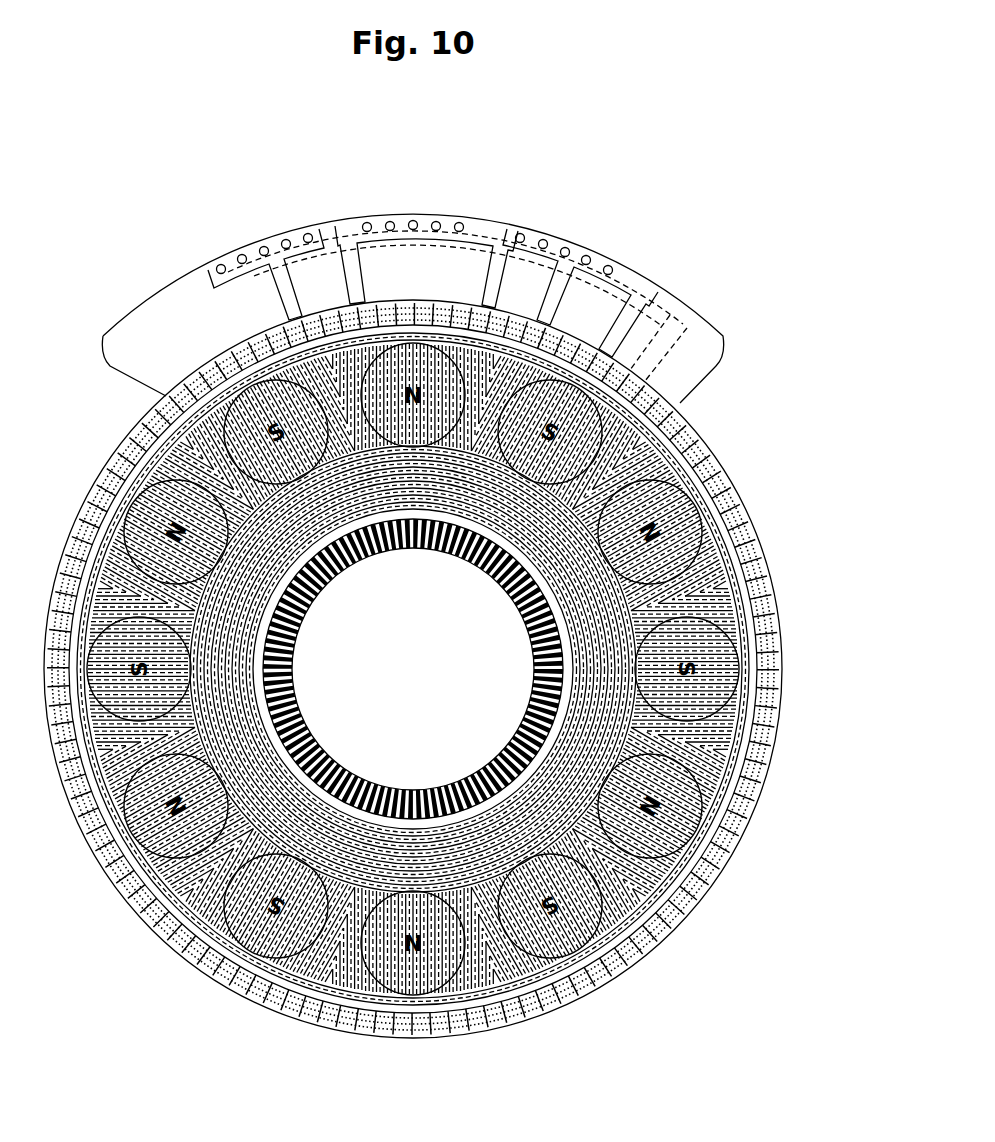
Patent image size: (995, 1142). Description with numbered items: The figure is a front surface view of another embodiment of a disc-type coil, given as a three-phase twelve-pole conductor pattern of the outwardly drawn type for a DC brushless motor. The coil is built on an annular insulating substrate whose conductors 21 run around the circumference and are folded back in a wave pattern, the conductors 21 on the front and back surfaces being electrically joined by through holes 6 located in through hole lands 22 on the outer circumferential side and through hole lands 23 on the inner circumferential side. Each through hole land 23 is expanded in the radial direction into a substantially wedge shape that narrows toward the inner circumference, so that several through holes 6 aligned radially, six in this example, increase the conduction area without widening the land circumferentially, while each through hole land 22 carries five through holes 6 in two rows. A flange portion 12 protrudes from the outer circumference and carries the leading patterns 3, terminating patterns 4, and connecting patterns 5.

The leading pattern 3 is at (488, 240).
The terminating pattern 4 is at (540, 247).
The connecting pattern 5 is at (645, 330).
The through hole 6 is at (407, 539).
The flange portion 12 is at (130, 310).
The conductor 21 is at (338, 1028).
The through hole land on the outer circumferential side 22 is at (183, 365).
The through hole land on the inner circumferential side 23 is at (390, 539).